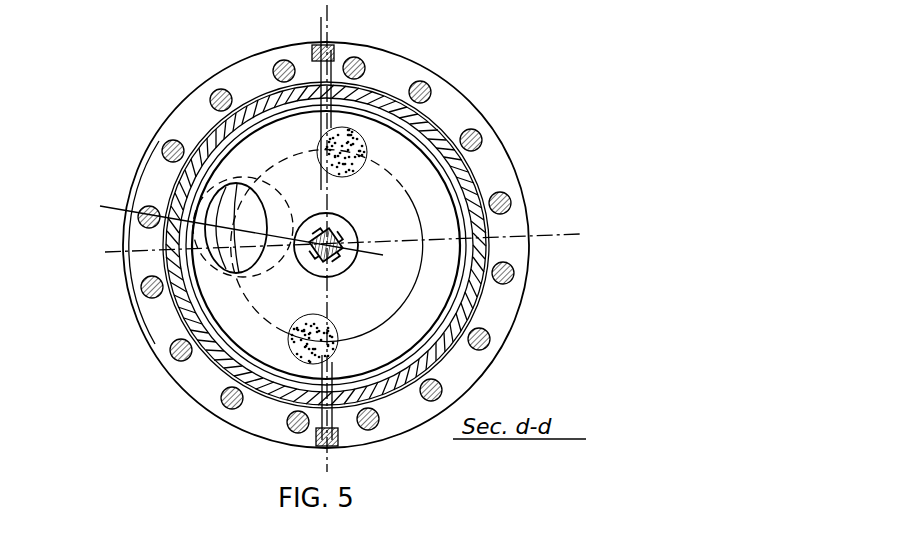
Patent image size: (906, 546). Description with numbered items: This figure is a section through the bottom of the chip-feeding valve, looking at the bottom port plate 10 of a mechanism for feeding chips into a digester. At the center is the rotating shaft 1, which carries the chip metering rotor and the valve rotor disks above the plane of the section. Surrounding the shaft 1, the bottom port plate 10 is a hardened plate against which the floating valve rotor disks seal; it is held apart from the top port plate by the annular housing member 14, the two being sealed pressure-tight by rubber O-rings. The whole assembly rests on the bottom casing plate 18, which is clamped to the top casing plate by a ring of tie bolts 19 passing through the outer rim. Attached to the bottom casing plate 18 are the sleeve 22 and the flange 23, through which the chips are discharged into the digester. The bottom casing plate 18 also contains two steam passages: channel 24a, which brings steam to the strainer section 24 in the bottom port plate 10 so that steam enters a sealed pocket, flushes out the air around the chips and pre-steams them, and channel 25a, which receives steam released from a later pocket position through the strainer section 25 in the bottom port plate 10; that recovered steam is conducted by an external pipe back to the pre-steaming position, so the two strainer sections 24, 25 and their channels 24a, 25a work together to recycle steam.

The rotating shaft 1 is at (340, 240).
The bottom port plate 10 is at (473, 163).
The annular housing member 14 is at (490, 232).
The bottom casing plate 18 is at (482, 113).
The tie bolts 19 is at (510, 200).
The sleeve 22 is at (238, 288).
The flange 23 is at (160, 316).
The strainer section 24 is at (292, 352).
The channel 24a is at (332, 366).
The strainer section 25 is at (362, 141).
The channel 25a is at (325, 125).